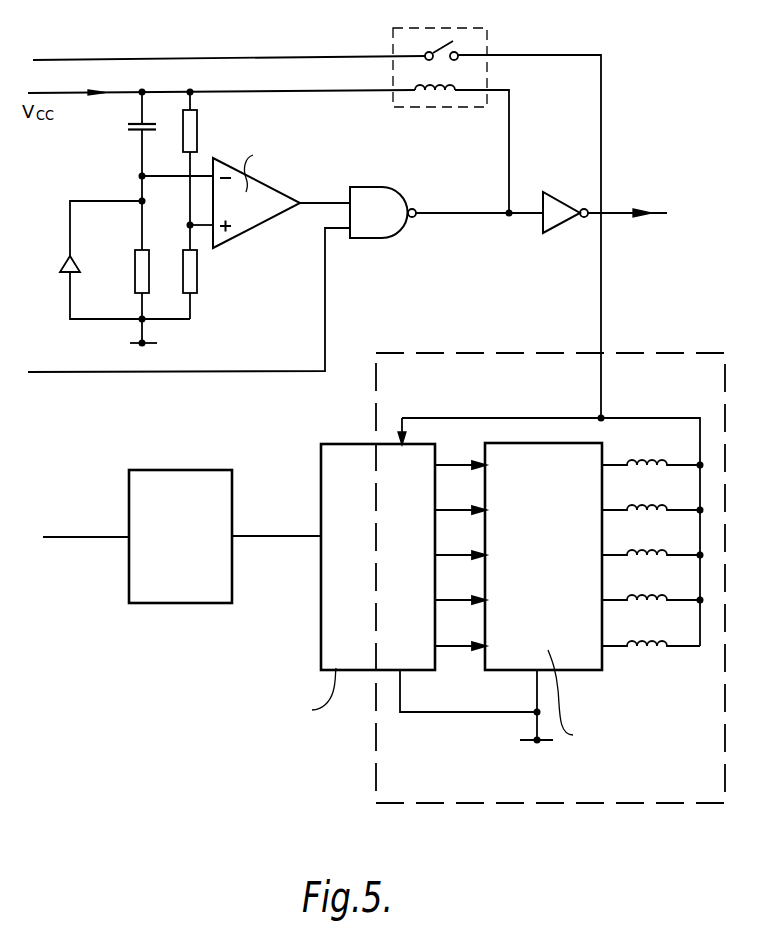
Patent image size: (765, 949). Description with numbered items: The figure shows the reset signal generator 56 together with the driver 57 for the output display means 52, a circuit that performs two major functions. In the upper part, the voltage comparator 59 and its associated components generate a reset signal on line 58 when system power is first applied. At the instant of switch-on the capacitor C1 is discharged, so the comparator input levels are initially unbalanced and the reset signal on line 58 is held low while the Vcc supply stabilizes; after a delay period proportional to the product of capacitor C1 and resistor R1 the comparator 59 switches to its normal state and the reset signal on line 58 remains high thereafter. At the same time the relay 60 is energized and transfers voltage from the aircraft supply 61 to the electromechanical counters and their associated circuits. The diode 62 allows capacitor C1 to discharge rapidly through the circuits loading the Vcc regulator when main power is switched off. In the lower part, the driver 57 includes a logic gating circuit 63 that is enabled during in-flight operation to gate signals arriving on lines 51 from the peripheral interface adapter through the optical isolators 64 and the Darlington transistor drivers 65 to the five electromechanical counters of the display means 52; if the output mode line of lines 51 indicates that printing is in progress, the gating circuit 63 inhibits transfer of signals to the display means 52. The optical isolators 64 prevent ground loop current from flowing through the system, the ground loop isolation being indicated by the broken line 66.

The lines 51 is at (66, 536).
The output display means 52 is at (663, 663).
The reset signal generator 56 is at (551, 44).
The driver 57 is at (266, 607).
The line 58 is at (627, 216).
The voltage comparator 59 is at (253, 222).
The relay 60 is at (450, 108).
The aircraft supply 61 is at (117, 58).
The diode 62 is at (64, 272).
The gating circuit 63 is at (160, 478).
The optical isolators 64 is at (336, 448).
The Darlington transistor drivers 65 is at (574, 663).
The broken line 66 is at (376, 783).
The capacitor C1 is at (132, 127).
The resistor R1 is at (137, 269).